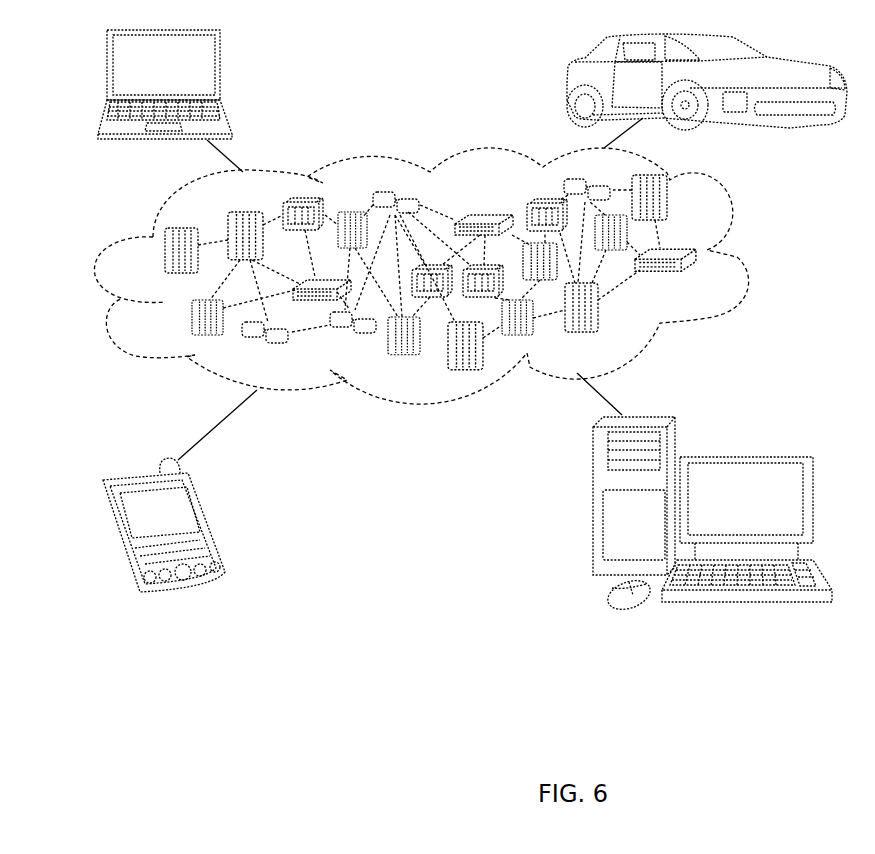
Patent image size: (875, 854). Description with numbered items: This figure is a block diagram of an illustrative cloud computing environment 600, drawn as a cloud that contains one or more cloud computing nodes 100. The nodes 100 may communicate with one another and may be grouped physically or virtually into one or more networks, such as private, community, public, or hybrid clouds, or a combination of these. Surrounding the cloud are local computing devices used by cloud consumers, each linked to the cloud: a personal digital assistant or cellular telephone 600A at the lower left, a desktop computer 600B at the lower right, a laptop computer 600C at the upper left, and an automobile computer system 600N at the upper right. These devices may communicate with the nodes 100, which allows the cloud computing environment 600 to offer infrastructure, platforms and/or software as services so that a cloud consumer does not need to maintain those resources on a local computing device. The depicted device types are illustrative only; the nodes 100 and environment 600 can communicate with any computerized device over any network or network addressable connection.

The cloud computing environment 600 is at (740, 257).
The cloud computing nodes 100 is at (699, 279).
The personal digital assistant (PDA) or cellular telephone 600A is at (213, 517).
The desktop computer 600B is at (743, 455).
The laptop computer 600C is at (223, 72).
The automobile computer system 600N is at (572, 82).